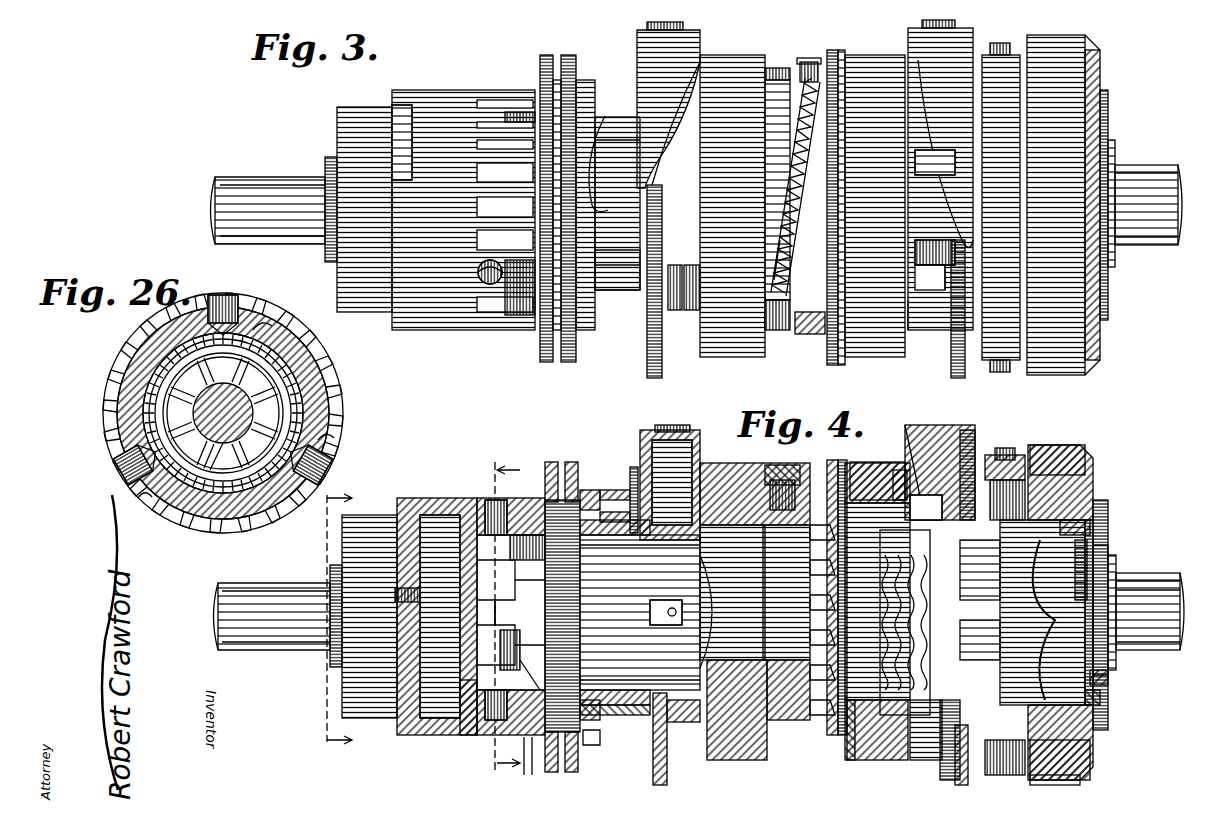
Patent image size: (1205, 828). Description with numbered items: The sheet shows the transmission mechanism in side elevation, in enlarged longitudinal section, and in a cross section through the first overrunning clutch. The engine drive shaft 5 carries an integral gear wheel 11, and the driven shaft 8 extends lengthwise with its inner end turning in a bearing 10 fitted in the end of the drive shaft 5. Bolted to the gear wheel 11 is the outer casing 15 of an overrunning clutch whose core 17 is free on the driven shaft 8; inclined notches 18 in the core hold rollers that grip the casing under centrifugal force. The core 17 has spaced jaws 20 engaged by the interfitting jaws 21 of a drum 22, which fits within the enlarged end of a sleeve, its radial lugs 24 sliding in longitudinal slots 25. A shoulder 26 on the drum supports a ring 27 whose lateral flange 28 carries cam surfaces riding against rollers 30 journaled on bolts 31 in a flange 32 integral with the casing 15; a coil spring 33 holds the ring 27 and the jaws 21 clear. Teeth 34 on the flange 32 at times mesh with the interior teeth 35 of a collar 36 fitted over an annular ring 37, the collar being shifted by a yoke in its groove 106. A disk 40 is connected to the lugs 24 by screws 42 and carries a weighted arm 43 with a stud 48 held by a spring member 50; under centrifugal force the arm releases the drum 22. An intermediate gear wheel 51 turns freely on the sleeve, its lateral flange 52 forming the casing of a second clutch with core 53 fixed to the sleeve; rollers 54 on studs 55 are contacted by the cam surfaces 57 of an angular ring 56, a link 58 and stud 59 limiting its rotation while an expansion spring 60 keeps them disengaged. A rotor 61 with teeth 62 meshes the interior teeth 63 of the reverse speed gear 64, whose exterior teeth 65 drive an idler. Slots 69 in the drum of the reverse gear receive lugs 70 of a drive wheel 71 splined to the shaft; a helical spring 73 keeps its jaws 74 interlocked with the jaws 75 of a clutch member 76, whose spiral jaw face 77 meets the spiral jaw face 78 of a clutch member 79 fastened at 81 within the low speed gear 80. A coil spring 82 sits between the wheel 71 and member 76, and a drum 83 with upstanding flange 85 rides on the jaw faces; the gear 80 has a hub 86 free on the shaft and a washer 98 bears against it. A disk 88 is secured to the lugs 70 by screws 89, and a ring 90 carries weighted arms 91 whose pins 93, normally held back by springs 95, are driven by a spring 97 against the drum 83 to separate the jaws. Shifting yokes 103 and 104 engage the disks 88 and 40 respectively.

In FIG. 3, the drive shaft 5 is at (250, 190).
In FIG. 4, the drive shaft 5 is at (270, 597).
In FIG. 3, the driven shaft 8 is at (1148, 178).
In FIG. 26, the driven shaft 8 is at (205, 404).
In FIG. 4, the driven shaft 8 is at (1140, 590).
In FIG. 3, the bearing 10 is at (328, 160).
In FIG. 4, the bearing 10 is at (332, 642).
In FIG. 3, the gear wheel 11 is at (355, 300).
In FIG. 4, the gear wheel 11 is at (378, 521).
In FIG. 3, the outer casing 15 is at (430, 98).
In FIG. 26, the outer casing 15 is at (150, 320).
In FIG. 4, the outer casing 15 is at (411, 500).
In FIG. 26, the core 17 is at (265, 395).
In FIG. 4, the core 17 is at (432, 705).
In FIG. 4, the inclined notches 18 is at (428, 600).
In FIG. 26, the jaws 20 is at (215, 480).
In FIG. 4, the jaws 20 is at (470, 700).
In FIG. 4, the jaws 21 is at (500, 730).
In FIG. 3, the drum 22 is at (640, 216).
In FIG. 4, the drum 22 is at (645, 702).
In FIG. 4, the lugs 24 is at (660, 545).
In FIG. 3, the longitudinal slots 25 is at (604, 154).
In FIG. 4, the longitudinal slots 25 is at (618, 697).
In FIG. 4, the shoulder 26 is at (506, 622).
In FIG. 4, the ring 27 is at (600, 751).
In FIG. 4, the lateral flange 28 is at (570, 460).
In FIG. 26, the rollers 30 is at (258, 322).
In FIG. 4, the rollers 30 is at (480, 510).
In FIG. 3, the bolts 31 is at (482, 283).
In FIG. 26, the bolts 31 is at (215, 295).
In FIG. 4, the bolts 31 is at (490, 500).
In FIG. 4, the flange 32 is at (520, 535).
In FIG. 4, the coil spring 33 is at (490, 705).
In FIG. 3, the teeth 34 is at (507, 320).
In FIG. 26, the teeth 34 is at (300, 367).
In FIG. 4, the teeth 34 is at (527, 776).
In FIG. 4, the interior teeth 35 is at (598, 497).
In FIG. 3, the collar 36 is at (577, 78).
In FIG. 4, the collar 36 is at (590, 490).
In FIG. 4, the annular ring 37 is at (598, 518).
In FIG. 3, the disk 40 is at (652, 340).
In FIG. 4, the disk 40 is at (668, 782).
In FIG. 4, the screws 42 is at (680, 722).
In FIG. 3, the arcuate weighted arm 43 is at (684, 162).
In FIG. 4, the arcuate weighted arm 43 is at (700, 466).
In FIG. 3, the stud 48 is at (676, 310).
In FIG. 3, the spring member 50 is at (688, 312).
In FIG. 3, the gear wheel 51 is at (720, 62).
In FIG. 4, the gear wheel 51 is at (745, 752).
In FIG. 4, the lateral flange 52 is at (800, 720).
In FIG. 4, the core 53 is at (765, 608).
In FIG. 4, the rollers 54 is at (765, 470).
In FIG. 3, the studs 55 is at (771, 68).
In FIG. 4, the studs 55 is at (792, 482).
In FIG. 3, the angular ring 56 is at (840, 53).
In FIG. 4, the angular ring 56 is at (845, 475).
In FIG. 3, the cam surfaces 57 is at (841, 350).
In FIG. 4, the cam surfaces 57 is at (832, 465).
In FIG. 3, the link 58 is at (806, 76).
In FIG. 3, the stud 59 is at (815, 62).
In FIG. 3, the expansion spring 60 is at (812, 335).
In FIG. 4, the rotor 61 is at (846, 742).
In FIG. 4, the teeth 62 is at (830, 570).
In FIG. 4, the interior teeth 63 is at (862, 482).
In FIG. 4, the reverse speed gear 64 is at (898, 490).
In FIG. 3, the exterior teeth 65 is at (873, 346).
In FIG. 4, the exterior teeth 65 is at (885, 760).
In FIG. 3, the slot 69 is at (938, 292).
In FIG. 3, the lugs 70 is at (945, 246).
In FIG. 4, the lugs 70 is at (948, 762).
In FIG. 3, the drive wheel 71 is at (941, 170).
In FIG. 4, the drive wheel 71 is at (926, 507).
In FIG. 4, the helical spring 73 is at (880, 600).
In FIG. 4, the jaws 74 is at (975, 595).
In FIG. 4, the jaws 75 is at (975, 631).
In FIG. 4, the clutch member 76 is at (1040, 560).
In FIG. 4, the spiral jaw face 77 is at (1150, 600).
In FIG. 4, the spiral jaw face 78 is at (1110, 560).
In FIG. 4, the clutch member 79 is at (1090, 548).
In FIG. 3, the low speed gear 80 is at (1092, 60).
In FIG. 4, the low speed gear 80 is at (1095, 484).
In FIG. 4, the fastening 81 is at (1095, 527).
In FIG. 4, the coil spring 82 is at (1100, 679).
In FIG. 4, the drum 83 is at (1100, 700).
In FIG. 4, the upstanding flange 85 is at (1095, 745).
In FIG. 3, the hub 86 is at (1115, 270).
In FIG. 4, the hub 86 is at (1118, 666).
In FIG. 3, the disk 88 is at (957, 378).
In FIG. 4, the disk 88 is at (968, 776).
In FIG. 4, the screws 89 is at (994, 455).
In FIG. 4, the ring 90 is at (1050, 765).
In FIG. 3, the weighted arcuate arms 91 is at (1005, 372).
In FIG. 4, the weighted arcuate arms 91 is at (1020, 482).
In FIG. 3, the pins 93 is at (1005, 45).
In FIG. 4, the pins 93 is at (1008, 450).
In FIG. 4, the spring 95 is at (1050, 470).
In FIG. 4, the spring 97 is at (1092, 506).
In FIG. 3, the washer 98 is at (1108, 112).
In FIG. 4, the washer 98 is at (1110, 715).
In FIG. 3, the yoke 103 is at (952, 33).
In FIG. 4, the yoke 103 is at (950, 436).
In FIG. 3, the yoke 104 is at (686, 33).
In FIG. 4, the yoke 104 is at (688, 428).
In FIG. 3, the groove 106 is at (565, 362).
In FIG. 4, the groove 106 is at (570, 773).